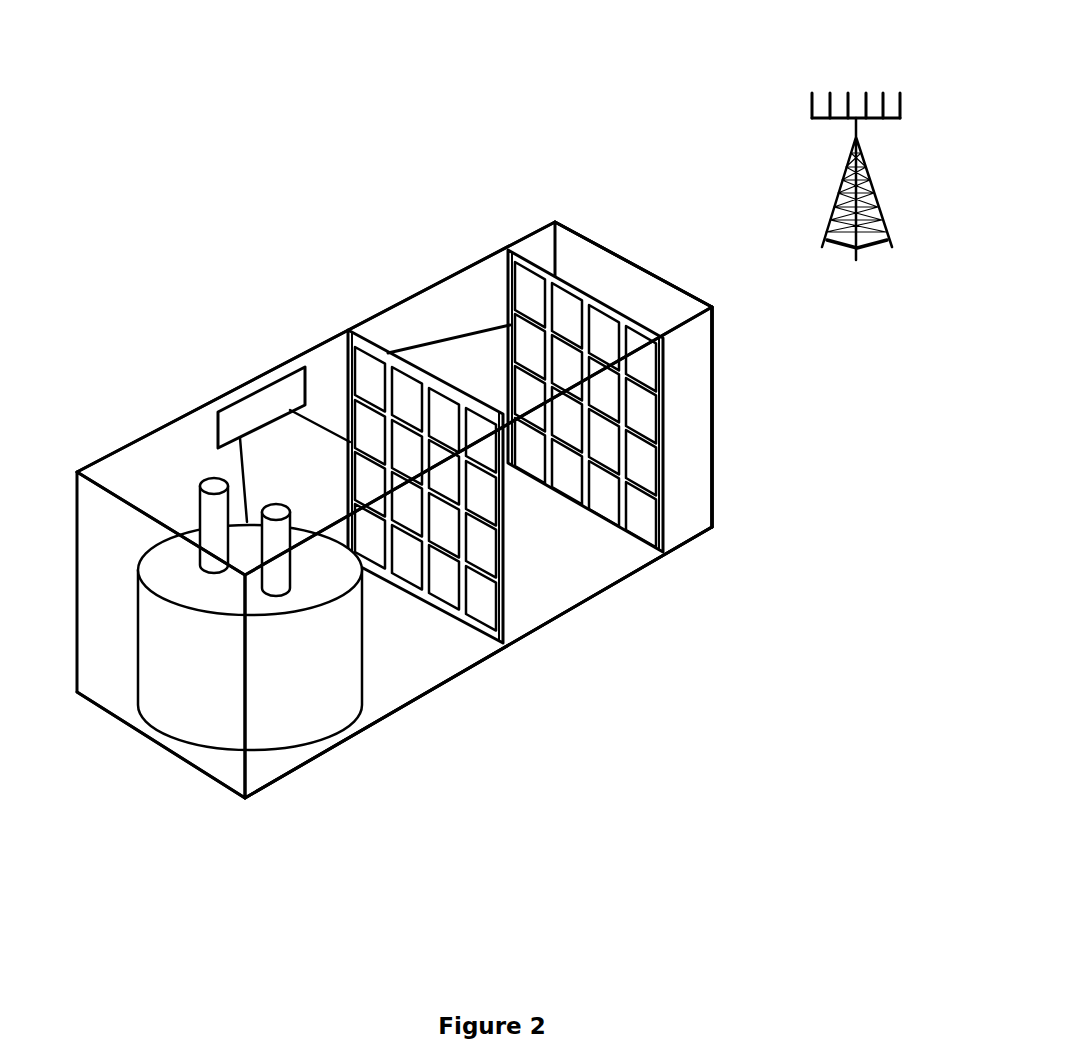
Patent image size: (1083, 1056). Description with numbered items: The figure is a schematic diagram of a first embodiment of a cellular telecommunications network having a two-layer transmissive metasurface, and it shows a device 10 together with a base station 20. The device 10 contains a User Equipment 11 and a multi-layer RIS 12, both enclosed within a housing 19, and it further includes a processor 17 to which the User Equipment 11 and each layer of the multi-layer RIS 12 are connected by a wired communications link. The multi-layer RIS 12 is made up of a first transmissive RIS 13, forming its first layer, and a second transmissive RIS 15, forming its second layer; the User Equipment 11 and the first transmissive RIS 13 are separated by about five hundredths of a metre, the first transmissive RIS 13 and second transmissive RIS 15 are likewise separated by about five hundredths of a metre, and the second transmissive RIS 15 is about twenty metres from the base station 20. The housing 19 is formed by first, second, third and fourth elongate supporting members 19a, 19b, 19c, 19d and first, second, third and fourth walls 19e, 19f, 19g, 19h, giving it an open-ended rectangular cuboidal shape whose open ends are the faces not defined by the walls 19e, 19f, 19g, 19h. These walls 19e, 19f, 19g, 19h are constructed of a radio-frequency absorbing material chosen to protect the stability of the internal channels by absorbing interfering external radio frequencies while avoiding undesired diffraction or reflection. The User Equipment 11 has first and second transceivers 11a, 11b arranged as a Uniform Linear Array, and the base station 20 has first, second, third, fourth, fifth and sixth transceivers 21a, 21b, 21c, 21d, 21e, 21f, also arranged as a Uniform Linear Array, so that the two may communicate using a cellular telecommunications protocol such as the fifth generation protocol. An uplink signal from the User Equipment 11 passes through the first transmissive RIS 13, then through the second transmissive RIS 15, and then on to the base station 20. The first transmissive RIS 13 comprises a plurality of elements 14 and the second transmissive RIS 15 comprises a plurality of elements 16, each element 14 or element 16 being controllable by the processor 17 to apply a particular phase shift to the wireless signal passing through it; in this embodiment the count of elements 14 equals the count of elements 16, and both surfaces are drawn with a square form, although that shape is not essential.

The device 10 is at (197, 215).
The User Equipment (UE) 11 is at (138, 560).
The first transceiver 11a is at (213, 523).
The second transceiver 11b is at (272, 572).
The multi-layer RIS 12 is at (451, 306).
The first transmissive RIS 13 is at (347, 338).
The elements 14 is at (425, 489).
The second transmissive RIS 15 is at (506, 266).
The elements 16 is at (585, 404).
The processor 17 is at (284, 444).
The housing 19 is at (264, 367).
The first elongate supporting member 19a is at (193, 410).
The second elongate supporting member 19b is at (103, 670).
The third elongate supporting member 19c is at (688, 318).
The fourth elongate supporting member 19d is at (688, 533).
The first wall 19e is at (105, 585).
The second wall 19f is at (235, 772).
The third wall 19g is at (693, 373).
The fourth wall 19h is at (613, 282).
The base station 20 is at (868, 246).
The first transceiver 21a is at (812, 93).
The second transceiver 21b is at (830, 93).
The third transceiver 21c is at (848, 93).
The fourth transceiver 21d is at (866, 93).
The fifth transceiver 21e is at (883, 93).
The sixth transceiver 21f is at (900, 93).